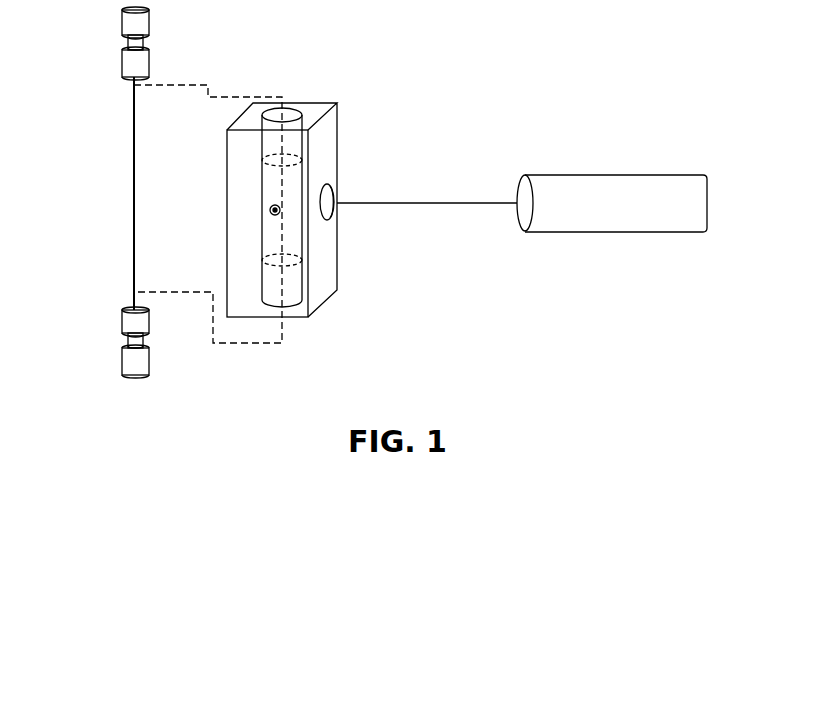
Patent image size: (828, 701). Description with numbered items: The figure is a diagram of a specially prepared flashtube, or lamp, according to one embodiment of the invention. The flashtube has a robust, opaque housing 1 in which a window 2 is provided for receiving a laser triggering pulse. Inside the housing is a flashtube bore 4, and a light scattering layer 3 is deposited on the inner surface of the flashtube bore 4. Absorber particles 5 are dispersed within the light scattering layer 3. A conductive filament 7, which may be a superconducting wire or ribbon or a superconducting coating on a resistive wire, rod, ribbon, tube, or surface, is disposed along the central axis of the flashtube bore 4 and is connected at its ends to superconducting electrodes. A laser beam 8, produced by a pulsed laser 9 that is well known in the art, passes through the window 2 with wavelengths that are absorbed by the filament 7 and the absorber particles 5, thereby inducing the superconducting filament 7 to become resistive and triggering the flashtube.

The housing 1 is at (322, 142).
The window 2 is at (341, 187).
The light scattering layer 3 is at (305, 242).
The flashtube bore 4 is at (305, 282).
The absorber particles 5 is at (266, 209).
The conductive filament 7 is at (130, 169).
The laser beam 8 is at (463, 198).
The pulsed laser 9 is at (608, 170).